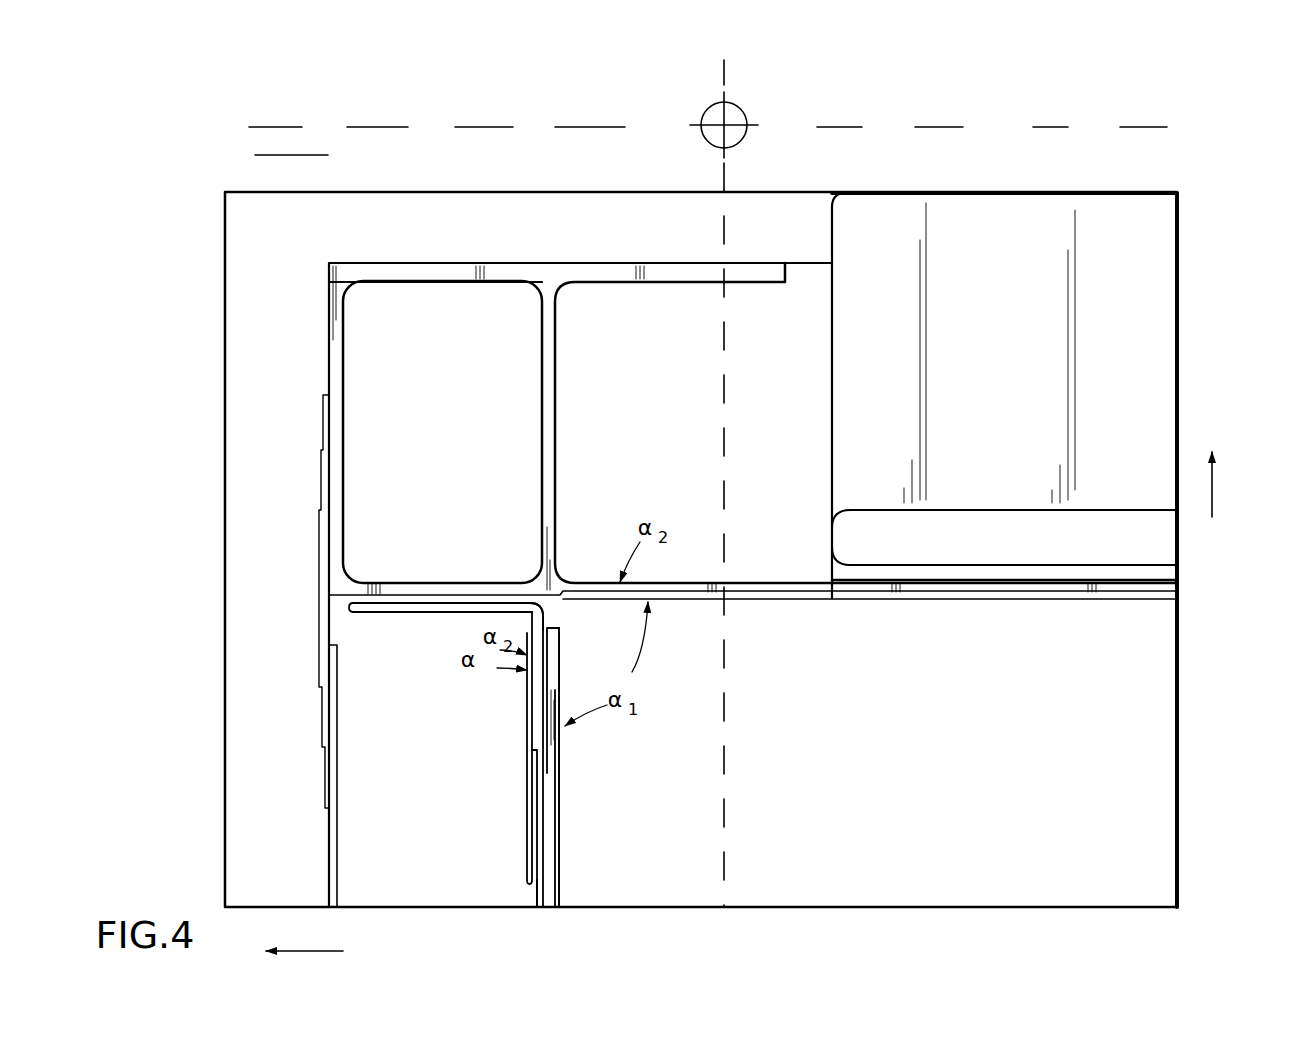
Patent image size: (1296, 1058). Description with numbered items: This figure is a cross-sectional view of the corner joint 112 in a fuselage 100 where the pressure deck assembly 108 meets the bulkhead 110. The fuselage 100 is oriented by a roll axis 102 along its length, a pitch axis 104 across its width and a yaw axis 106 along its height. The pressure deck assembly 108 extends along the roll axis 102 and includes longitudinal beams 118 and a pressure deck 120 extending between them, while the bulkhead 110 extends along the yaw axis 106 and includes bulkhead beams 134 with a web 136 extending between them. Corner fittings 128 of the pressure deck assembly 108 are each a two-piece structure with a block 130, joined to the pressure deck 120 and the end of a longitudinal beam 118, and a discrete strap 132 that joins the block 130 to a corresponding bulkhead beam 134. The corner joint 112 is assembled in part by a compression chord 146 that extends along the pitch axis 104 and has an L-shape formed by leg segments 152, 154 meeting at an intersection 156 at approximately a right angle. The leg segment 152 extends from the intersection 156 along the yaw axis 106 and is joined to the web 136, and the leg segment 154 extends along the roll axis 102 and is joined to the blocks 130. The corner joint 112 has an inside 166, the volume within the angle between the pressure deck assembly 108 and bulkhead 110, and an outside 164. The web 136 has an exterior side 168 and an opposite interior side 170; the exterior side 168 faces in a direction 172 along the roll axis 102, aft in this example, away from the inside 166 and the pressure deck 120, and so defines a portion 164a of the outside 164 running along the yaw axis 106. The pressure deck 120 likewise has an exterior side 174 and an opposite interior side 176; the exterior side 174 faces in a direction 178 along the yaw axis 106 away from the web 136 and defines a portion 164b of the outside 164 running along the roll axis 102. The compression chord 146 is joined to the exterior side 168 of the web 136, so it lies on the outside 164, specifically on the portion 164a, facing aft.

The fuselage 100 is at (1200, 168).
The roll axis 102 is at (272, 126).
The pitch axis 104 is at (728, 122).
The yaw axis 106 is at (728, 66).
The pressure deck assembly 108 is at (1185, 262).
The bulkhead 110 is at (538, 908).
The corner joint 112 is at (255, 242).
The longitudinal beams 118 is at (1125, 335).
The pressure deck 120 is at (797, 605).
The corner fittings 128 is at (475, 272).
The block 130 is at (560, 278).
The strap 132 is at (322, 565).
The bulkhead beams 134 is at (328, 862).
The web 136 is at (556, 862).
The compression chord 146 is at (548, 619).
The leg segment 152 is at (530, 682).
The leg segment 154 is at (362, 622).
The intersection 156 is at (520, 615).
The outside 164 is at (162, 118).
The portion of the outside 164a is at (265, 400).
The portion of the outside 164b is at (510, 97).
The inside 166 is at (702, 632).
The exterior side 168 is at (527, 842).
The interior side 170 is at (568, 812).
The direction 172 is at (292, 156).
The exterior side 174 is at (940, 568).
The interior side 176 is at (940, 625).
The direction 178 is at (1215, 492).